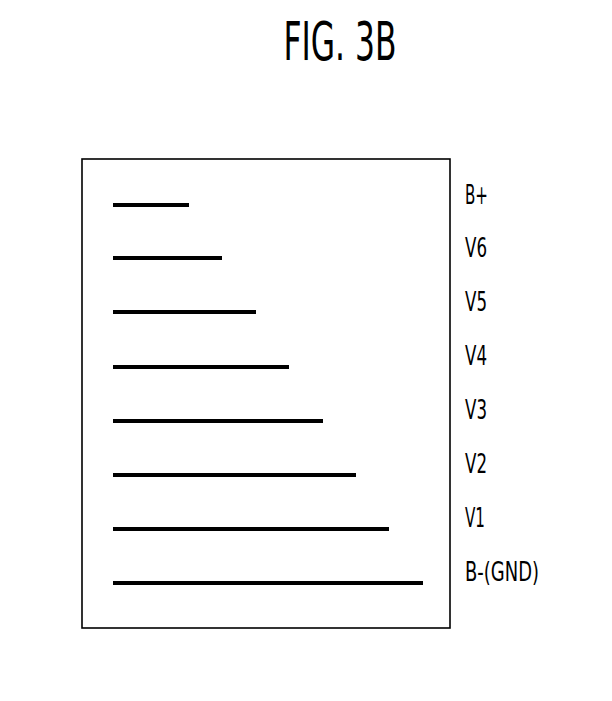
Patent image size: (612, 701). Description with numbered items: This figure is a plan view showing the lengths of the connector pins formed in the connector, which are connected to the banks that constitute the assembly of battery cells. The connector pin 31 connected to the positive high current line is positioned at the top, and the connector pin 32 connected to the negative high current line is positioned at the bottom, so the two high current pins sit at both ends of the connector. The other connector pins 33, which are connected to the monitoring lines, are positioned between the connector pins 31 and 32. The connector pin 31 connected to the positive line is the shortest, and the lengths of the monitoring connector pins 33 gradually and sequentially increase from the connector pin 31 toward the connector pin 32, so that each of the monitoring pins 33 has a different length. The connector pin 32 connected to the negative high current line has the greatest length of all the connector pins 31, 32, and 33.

The connector pin 31 is at (160, 205).
The connector pin 32 is at (200, 585).
The monitoring connector pins 33 is at (105, 250).